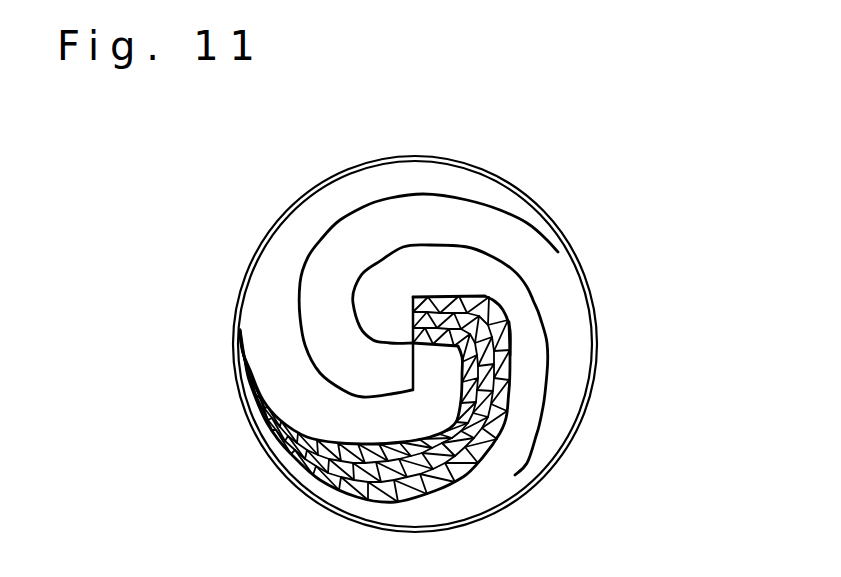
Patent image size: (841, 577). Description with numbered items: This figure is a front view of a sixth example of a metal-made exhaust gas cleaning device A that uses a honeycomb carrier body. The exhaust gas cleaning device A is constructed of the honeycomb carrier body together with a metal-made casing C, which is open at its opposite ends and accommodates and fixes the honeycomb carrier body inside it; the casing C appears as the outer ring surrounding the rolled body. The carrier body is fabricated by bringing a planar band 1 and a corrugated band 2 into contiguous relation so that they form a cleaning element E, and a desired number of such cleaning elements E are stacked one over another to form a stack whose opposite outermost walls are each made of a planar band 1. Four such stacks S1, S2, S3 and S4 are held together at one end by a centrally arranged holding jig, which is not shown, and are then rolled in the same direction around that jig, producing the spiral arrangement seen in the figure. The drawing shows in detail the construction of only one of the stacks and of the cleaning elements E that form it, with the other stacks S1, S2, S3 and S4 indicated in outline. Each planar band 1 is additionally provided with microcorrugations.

The exhaust gas cleaning device A is at (606, 219).
The planar band 1 is at (490, 296).
The corrugated band 2 is at (504, 330).
The cleaning element E is at (505, 341).
The casing C is at (283, 467).
The stack S1 is at (450, 268).
The stack S2 is at (373, 378).
The stack S3 is at (436, 398).
The stack S4 is at (404, 303).